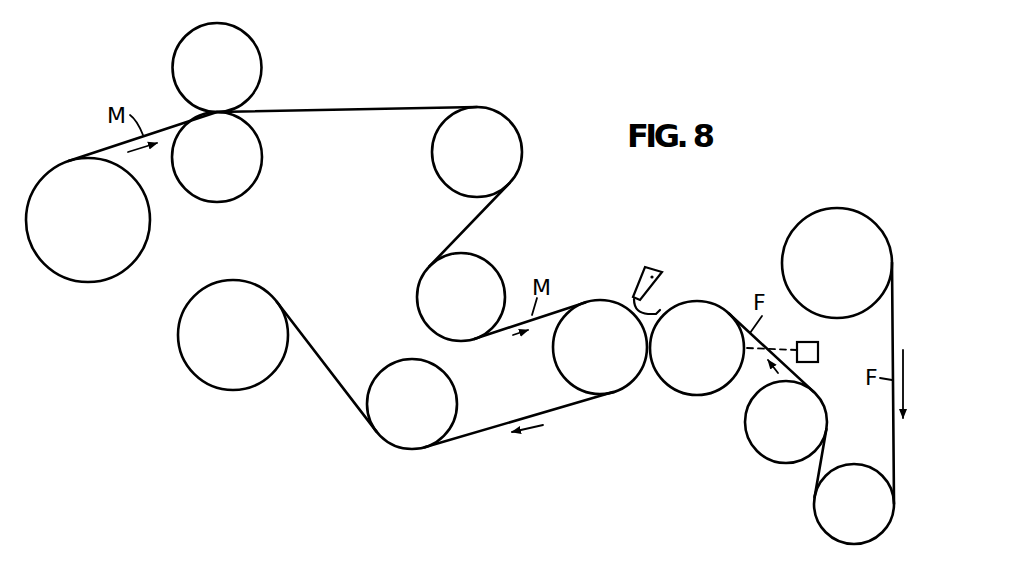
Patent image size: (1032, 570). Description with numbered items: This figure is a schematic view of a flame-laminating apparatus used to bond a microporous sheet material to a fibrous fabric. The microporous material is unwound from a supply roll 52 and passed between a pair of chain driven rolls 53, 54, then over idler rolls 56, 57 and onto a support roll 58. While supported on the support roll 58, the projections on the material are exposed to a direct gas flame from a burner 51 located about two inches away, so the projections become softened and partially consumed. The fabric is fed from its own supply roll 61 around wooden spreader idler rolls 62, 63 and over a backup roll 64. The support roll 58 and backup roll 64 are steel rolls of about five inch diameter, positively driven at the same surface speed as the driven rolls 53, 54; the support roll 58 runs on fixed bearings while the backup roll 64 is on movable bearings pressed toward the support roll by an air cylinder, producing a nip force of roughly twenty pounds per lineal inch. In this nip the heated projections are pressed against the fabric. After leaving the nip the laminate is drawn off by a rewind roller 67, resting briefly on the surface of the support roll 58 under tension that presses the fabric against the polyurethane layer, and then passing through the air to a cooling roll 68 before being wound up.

The burner 51 is at (643, 277).
The supply roll 52 is at (133, 240).
The chain driven roll 53 is at (247, 172).
The chain driven roll 54 is at (245, 72).
The idler roll 56 is at (452, 150).
The idler roll 57 is at (448, 297).
The support roll 58 is at (575, 350).
The fabric supply roll 61 is at (810, 245).
The wooden spreader idler roll 62 is at (832, 512).
The wooden spreader idler roll 63 is at (762, 430).
The backup roll 64 is at (701, 362).
The rewind roller 67 is at (202, 356).
The cooling roll 68 is at (397, 385).